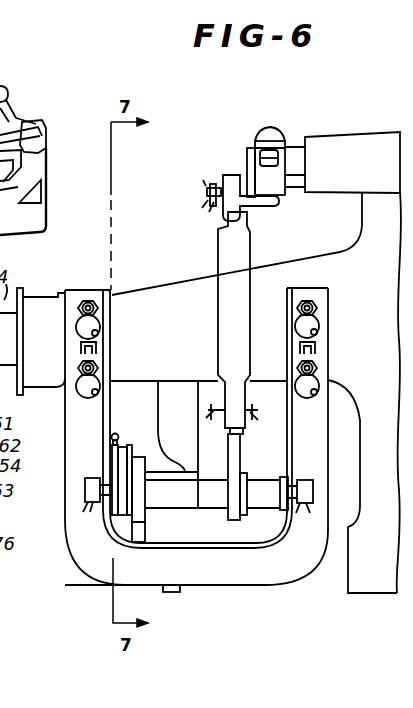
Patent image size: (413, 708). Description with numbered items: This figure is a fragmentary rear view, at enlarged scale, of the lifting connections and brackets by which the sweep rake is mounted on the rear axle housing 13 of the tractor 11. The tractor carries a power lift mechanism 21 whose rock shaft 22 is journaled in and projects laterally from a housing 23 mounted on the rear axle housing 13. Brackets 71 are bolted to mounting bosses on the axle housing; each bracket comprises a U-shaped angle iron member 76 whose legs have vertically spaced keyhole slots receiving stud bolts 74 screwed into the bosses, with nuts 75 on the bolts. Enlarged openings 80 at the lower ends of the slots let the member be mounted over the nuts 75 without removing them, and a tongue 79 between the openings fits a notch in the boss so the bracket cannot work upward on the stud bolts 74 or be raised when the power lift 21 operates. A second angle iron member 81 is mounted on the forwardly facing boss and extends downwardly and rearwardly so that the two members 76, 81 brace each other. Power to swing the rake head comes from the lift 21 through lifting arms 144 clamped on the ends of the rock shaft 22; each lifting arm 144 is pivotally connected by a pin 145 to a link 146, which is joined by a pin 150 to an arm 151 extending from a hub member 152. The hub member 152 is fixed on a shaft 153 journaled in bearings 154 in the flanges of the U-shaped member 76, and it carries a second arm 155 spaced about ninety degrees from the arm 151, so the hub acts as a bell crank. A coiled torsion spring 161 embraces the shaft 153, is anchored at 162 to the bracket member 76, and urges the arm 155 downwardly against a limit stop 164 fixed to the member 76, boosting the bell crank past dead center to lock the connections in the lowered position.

The tractor 11 is at (346, 238).
The rear axle housing 13 is at (177, 295).
The power lift mechanism 21 is at (24, 106).
The rock shaft 22 is at (295, 160).
The housing 23 is at (373, 150).
The bracket 71 is at (268, 594).
The stud bolt 74 is at (88, 299).
The nut 75 is at (81, 299).
The U-shaped angle iron member 76 is at (287, 562).
The tongue 79 is at (80, 347).
The enlarged opening 80 is at (98, 331).
The second angle iron member 81 is at (183, 392).
The lifting arm 144 is at (238, 177).
The pin 145 is at (207, 192).
The link 146 is at (240, 310).
The pin 150 is at (240, 433).
The arm 151 is at (235, 456).
The hub member 152 is at (209, 500).
The shaft 153 is at (267, 494).
The bearing 154 is at (300, 478).
The second arm 155 is at (140, 486).
The coiled torsion spring 161 is at (110, 517).
The anchor 162 is at (150, 410).
The limit stop 164 is at (140, 540).